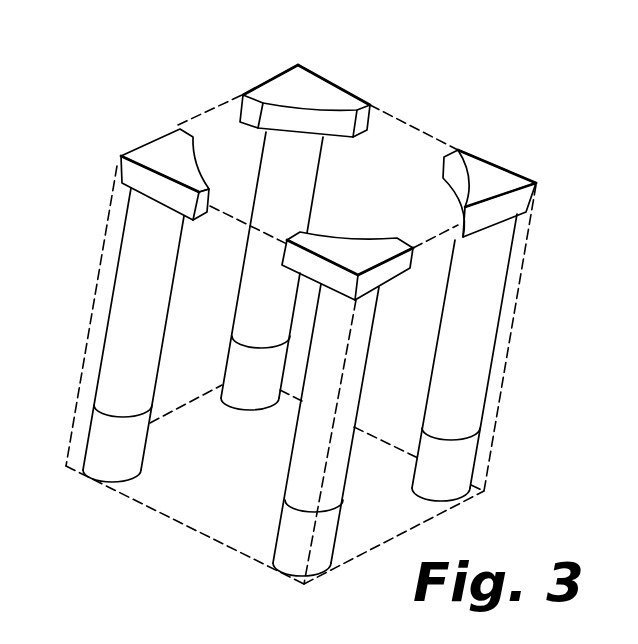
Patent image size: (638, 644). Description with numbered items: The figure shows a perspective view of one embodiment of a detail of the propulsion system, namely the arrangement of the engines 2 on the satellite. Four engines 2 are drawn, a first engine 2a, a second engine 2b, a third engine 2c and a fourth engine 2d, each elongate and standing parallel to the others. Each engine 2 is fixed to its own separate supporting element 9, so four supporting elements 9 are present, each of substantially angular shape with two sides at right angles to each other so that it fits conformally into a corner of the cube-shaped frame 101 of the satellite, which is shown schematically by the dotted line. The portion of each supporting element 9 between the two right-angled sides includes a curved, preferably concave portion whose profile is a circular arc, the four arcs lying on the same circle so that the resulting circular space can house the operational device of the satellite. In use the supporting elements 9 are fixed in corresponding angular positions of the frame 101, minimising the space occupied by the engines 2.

The frame 101 is at (420, 122).
The engines 2 is at (308, 316).
The first engine 2a is at (103, 335).
The second engine 2b is at (250, 271).
The third engine 2c is at (502, 357).
The fourth engine 2d is at (291, 430).
The supporting element 9 is at (328, 153).